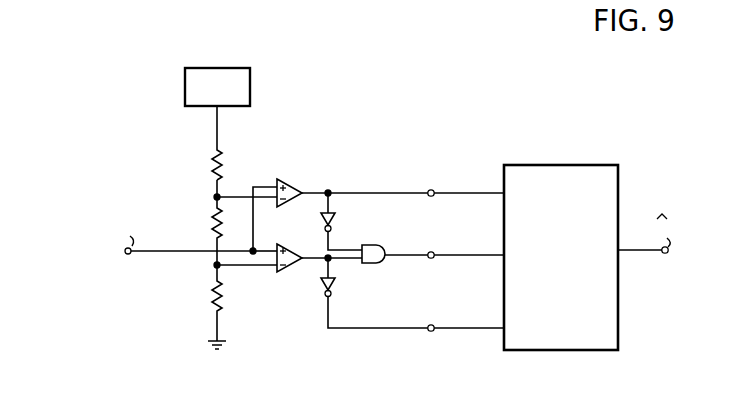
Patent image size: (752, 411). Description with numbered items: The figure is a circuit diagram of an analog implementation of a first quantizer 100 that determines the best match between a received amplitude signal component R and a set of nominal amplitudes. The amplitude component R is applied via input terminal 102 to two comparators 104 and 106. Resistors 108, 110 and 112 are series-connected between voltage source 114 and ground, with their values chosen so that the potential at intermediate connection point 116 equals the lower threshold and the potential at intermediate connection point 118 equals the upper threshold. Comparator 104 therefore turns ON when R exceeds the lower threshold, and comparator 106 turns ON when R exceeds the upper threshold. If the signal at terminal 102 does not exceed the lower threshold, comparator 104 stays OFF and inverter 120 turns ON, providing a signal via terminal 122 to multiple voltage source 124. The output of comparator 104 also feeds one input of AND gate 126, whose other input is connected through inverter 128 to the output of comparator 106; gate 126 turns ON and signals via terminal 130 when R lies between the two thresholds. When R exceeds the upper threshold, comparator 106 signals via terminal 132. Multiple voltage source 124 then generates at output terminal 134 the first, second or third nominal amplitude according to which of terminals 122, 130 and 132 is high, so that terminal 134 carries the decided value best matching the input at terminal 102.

The first quantizer 100 is at (103, 163).
The input terminal 102 is at (126, 255).
The comparator 104 is at (293, 271).
The comparator 106 is at (286, 186).
The resistor 108 is at (226, 160).
The resistor 110 is at (213, 236).
The resistor 112 is at (225, 290).
The voltage source 114 is at (185, 81).
The intermediate connection point 116 is at (213, 267).
The intermediate connection point 118 is at (214, 197).
The inverter 120 is at (335, 289).
The terminal 122 is at (433, 325).
The multiple voltage source 124 is at (572, 338).
The AND gate 126 is at (374, 250).
The inverter 128 is at (323, 223).
The terminal 130 is at (433, 252).
The terminal 132 is at (431, 190).
The output terminal 134 is at (667, 253).